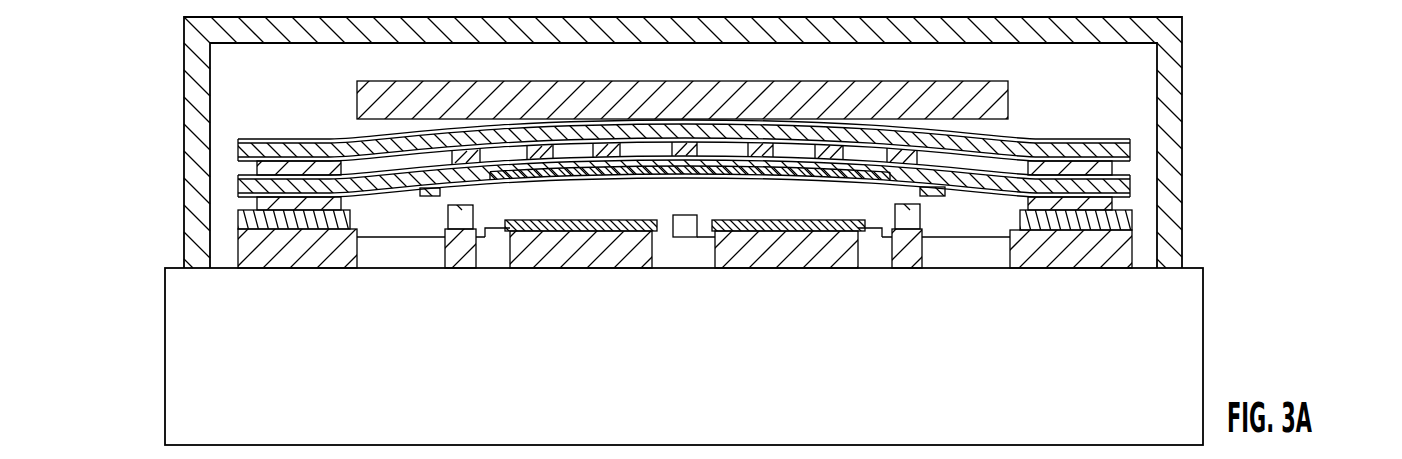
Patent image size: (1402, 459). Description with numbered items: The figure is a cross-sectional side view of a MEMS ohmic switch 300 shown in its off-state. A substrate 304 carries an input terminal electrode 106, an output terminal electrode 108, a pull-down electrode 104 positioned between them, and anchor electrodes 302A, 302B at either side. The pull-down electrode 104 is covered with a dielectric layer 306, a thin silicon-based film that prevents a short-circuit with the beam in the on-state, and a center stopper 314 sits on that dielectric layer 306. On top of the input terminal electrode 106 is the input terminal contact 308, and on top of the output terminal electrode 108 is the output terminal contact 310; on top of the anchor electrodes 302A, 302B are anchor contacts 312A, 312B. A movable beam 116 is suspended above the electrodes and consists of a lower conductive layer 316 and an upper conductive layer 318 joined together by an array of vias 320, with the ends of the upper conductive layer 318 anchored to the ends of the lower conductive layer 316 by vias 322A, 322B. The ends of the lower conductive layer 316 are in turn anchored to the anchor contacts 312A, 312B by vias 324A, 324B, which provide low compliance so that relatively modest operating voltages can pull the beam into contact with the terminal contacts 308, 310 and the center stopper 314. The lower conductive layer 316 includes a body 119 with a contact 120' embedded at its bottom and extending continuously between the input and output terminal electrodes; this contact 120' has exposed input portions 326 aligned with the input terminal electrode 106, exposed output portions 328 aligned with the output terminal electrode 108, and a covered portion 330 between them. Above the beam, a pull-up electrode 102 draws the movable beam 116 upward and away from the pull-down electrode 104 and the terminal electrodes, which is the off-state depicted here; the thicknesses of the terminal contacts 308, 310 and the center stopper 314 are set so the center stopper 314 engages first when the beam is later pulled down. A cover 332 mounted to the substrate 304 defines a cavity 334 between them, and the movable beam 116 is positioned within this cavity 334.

The MEMS ohmic switch 300 is at (1318, 131).
The pull-up electrode 102 is at (768, 81).
The pull-down electrode 104 is at (598, 268).
The input terminal electrode 106 is at (460, 268).
The output terminal electrode 108 is at (905, 270).
The movable beam 116 is at (445, 129).
The body 119 is at (1005, 183).
The contact 120' is at (690, 254).
The anchor electrode 302A is at (293, 270).
The anchor electrode 302B is at (1047, 270).
The substrate 304 is at (165, 397).
The dielectric layer 306 is at (555, 225).
The input terminal contact 308 is at (458, 205).
The output terminal contact 310 is at (912, 204).
The anchor contact 312A is at (245, 220).
The anchor contact 312B is at (1132, 218).
The center stopper 314 is at (687, 215).
The lower conductive layer 316 is at (355, 185).
The upper conductive layer 318 is at (1023, 150).
The array of vias 320 is at (893, 152).
The via 322A is at (300, 150).
The via 322B is at (1108, 160).
The via 324A is at (262, 185).
The via 324B is at (1105, 200).
The exposed input portion 326 is at (436, 196).
The exposed output portion 328 is at (934, 197).
The covered portion 330 is at (728, 176).
The cover 332 is at (1182, 117).
The cavity 334 is at (1116, 86).